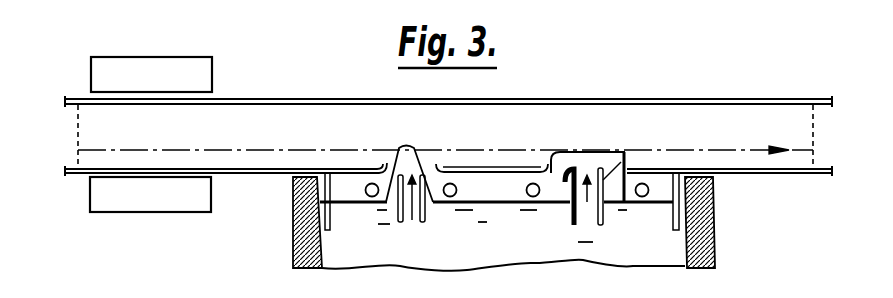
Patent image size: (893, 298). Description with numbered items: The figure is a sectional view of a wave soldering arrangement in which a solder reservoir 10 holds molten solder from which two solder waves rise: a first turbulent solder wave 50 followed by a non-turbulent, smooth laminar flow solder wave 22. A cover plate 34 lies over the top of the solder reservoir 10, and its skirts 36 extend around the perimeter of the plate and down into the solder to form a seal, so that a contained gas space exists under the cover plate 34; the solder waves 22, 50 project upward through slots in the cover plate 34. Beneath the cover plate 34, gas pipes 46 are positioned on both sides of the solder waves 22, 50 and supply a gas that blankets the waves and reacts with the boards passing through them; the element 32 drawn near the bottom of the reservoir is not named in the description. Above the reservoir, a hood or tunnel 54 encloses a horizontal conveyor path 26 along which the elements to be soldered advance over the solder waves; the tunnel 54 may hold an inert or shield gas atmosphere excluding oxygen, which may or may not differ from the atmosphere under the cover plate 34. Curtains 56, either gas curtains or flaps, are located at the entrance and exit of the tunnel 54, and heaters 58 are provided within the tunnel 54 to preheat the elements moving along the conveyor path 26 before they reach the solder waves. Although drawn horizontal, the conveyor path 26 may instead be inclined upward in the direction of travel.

The solder reservoir 10 is at (715, 226).
The non-turbulent solder wave 22 is at (557, 152).
The conveyor path 26 is at (717, 150).
The susceptor plate 32 is at (496, 250).
The cover plate 34 is at (496, 167).
The skirts 36 is at (293, 214).
The gas pipes 46 is at (371, 197).
The turbulent solder wave 50 is at (408, 146).
The tunnel 54 is at (690, 99).
The curtains 56 is at (80, 125).
The heaters 58 is at (157, 58).